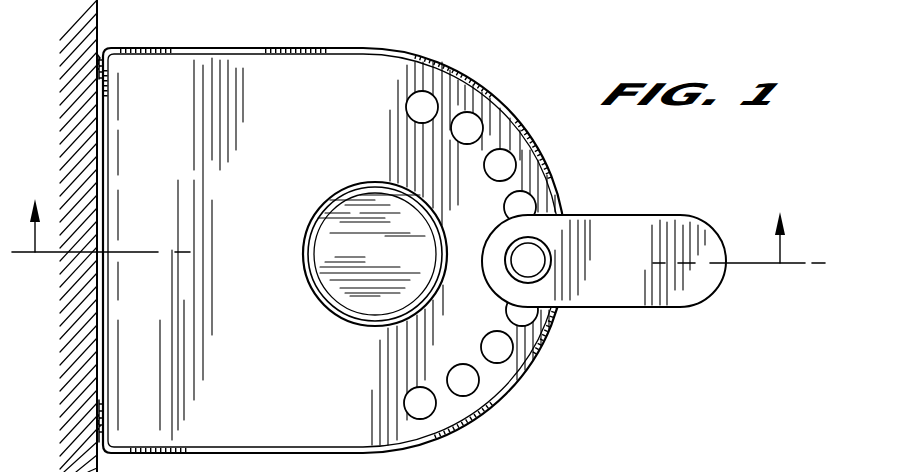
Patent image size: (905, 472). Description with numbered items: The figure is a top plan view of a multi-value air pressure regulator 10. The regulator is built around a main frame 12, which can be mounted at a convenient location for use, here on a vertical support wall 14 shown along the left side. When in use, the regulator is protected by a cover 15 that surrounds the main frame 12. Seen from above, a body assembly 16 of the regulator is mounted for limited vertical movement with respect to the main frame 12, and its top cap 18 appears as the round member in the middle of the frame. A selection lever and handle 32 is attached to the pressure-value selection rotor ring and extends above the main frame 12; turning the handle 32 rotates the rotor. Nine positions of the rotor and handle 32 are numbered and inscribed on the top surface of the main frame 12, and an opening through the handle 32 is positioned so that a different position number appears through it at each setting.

The multi-value air pressure regulator 10 is at (570, 358).
The main frame 12 is at (400, 70).
The vertical support wall 14 is at (101, 49).
The cover 15 is at (330, 50).
The body assembly 16 is at (352, 178).
The top cap 18 is at (345, 283).
The selection lever and handle 32 is at (642, 218).